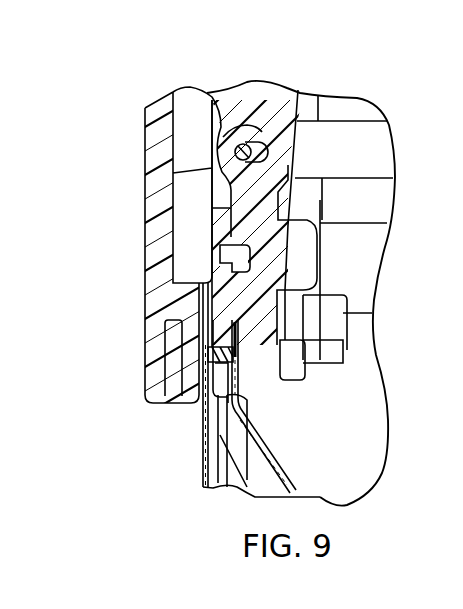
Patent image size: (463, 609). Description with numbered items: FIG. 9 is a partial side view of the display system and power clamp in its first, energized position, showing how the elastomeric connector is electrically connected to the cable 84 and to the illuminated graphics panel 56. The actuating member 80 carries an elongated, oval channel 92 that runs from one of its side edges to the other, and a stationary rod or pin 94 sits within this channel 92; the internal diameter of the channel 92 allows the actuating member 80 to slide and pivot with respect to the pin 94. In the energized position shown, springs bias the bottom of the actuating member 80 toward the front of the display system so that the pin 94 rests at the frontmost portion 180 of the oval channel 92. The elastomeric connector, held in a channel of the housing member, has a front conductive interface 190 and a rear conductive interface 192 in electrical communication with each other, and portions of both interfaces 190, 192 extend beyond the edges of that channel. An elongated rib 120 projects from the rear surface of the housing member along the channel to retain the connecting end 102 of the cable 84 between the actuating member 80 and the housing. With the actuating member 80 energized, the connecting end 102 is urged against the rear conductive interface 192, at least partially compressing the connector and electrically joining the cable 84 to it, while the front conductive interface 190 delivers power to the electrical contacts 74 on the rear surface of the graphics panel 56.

The illuminated graphics panel 56 is at (200, 457).
The electrical contacts 74 is at (190, 386).
The actuating member 80 is at (218, 97).
The cable 84 is at (247, 493).
The oval channel 92 is at (262, 127).
The pin 94 is at (241, 150).
The connecting end 102 is at (245, 383).
The rib 120 is at (245, 338).
The frontmost portion of the oval channel 180 is at (237, 139).
The front conductive interface 190 is at (236, 358).
The rear conductive interface 192 is at (240, 358).